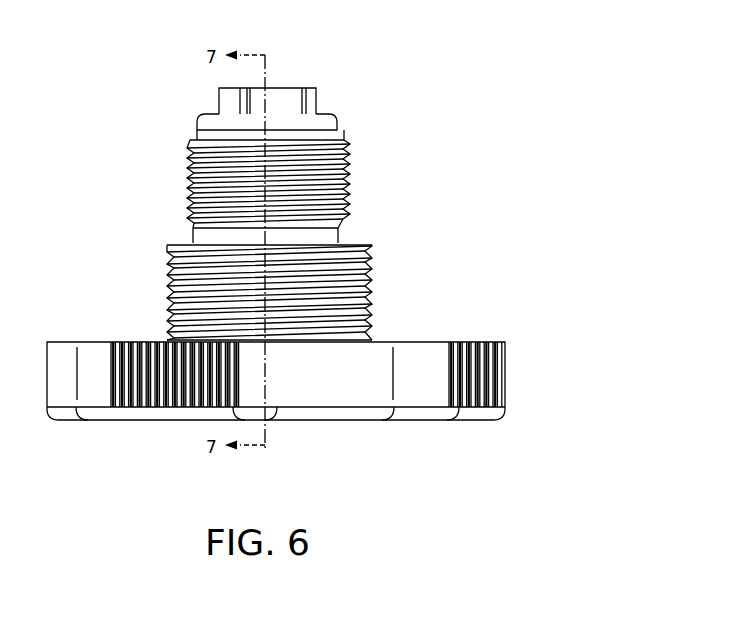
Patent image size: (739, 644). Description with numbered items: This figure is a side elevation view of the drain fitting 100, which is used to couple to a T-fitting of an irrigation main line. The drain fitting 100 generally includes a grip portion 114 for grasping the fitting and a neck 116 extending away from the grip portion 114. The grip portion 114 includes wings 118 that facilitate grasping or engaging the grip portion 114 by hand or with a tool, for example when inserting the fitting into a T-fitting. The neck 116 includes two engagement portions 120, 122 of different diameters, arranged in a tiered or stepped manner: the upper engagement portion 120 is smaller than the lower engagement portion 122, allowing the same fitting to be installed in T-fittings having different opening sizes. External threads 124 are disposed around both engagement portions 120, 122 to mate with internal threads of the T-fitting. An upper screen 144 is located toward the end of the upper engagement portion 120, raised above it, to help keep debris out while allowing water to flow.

The drain fitting 100 is at (545, 92).
The grip portion 114 is at (432, 423).
The neck 116 is at (122, 151).
The wings 118 is at (505, 345).
The upper engagement portion 120 is at (178, 201).
The lower engagement portion 122 is at (160, 293).
The external threads 124 is at (345, 141).
The upper screen 144 is at (310, 87).